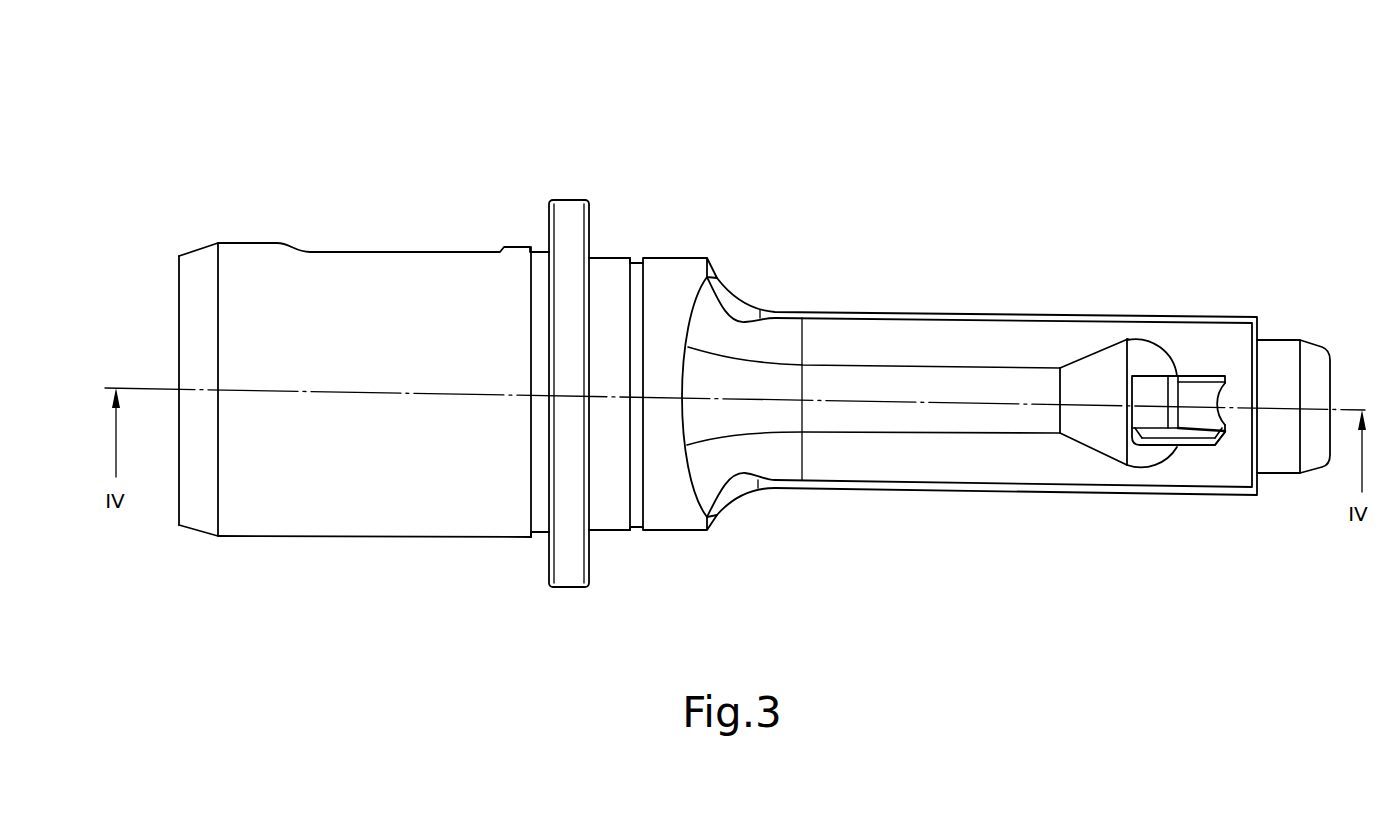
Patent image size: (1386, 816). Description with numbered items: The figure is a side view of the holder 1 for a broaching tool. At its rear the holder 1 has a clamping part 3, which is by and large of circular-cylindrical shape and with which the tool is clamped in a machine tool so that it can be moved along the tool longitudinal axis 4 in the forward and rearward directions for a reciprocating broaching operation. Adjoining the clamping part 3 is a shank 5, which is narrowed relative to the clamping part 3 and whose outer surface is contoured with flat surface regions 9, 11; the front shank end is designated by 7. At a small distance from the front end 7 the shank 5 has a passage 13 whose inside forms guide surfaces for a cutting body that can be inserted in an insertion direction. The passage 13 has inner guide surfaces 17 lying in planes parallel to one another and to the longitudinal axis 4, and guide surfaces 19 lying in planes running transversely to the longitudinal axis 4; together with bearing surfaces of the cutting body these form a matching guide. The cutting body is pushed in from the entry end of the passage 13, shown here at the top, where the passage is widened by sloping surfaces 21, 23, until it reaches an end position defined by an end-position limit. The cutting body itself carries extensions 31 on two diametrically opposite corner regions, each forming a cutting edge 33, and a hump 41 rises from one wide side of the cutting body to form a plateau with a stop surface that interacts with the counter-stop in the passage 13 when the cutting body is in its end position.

The holder 1 is at (393, 168).
The clamping part 3 is at (358, 537).
The tool longitudinal axis 4 is at (152, 385).
The shank 5 is at (888, 312).
The front shank end 7 is at (1332, 370).
The flat surface region 9 is at (842, 412).
The flat surface region 11 is at (955, 333).
The passage 13 is at (1222, 447).
The inner guide surfaces 17 is at (1223, 383).
The guide surfaces 19 is at (1223, 380).
The sloping surface 21 is at (1157, 385).
The sloping surface 23 is at (1098, 360).
The extension 31 is at (1225, 437).
The cutting edge 33 is at (1203, 382).
The hump 41 is at (1160, 437).